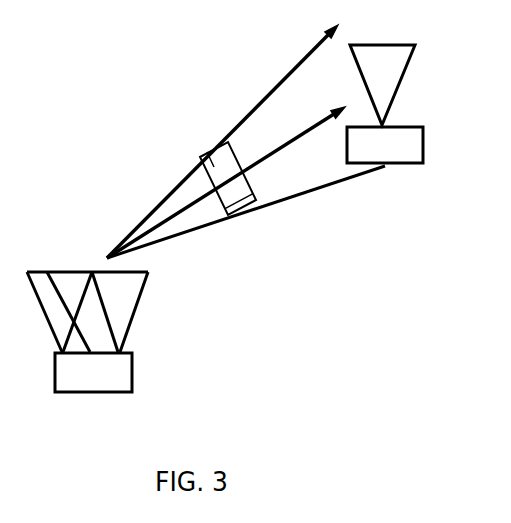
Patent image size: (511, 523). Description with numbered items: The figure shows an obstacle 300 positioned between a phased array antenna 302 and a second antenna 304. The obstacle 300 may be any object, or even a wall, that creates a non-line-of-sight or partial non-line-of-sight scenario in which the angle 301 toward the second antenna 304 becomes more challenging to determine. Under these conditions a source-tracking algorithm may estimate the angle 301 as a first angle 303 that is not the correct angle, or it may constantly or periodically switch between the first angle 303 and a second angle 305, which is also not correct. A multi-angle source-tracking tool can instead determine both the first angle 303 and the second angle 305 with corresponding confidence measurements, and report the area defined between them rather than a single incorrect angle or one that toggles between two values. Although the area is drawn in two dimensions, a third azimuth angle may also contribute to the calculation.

The obstacle 300 is at (200, 155).
The angle 301 is at (250, 168).
The phased array antenna 302 is at (132, 368).
The first angle 303 is at (258, 215).
The second antenna 304 is at (423, 145).
The second angle 305 is at (302, 56).